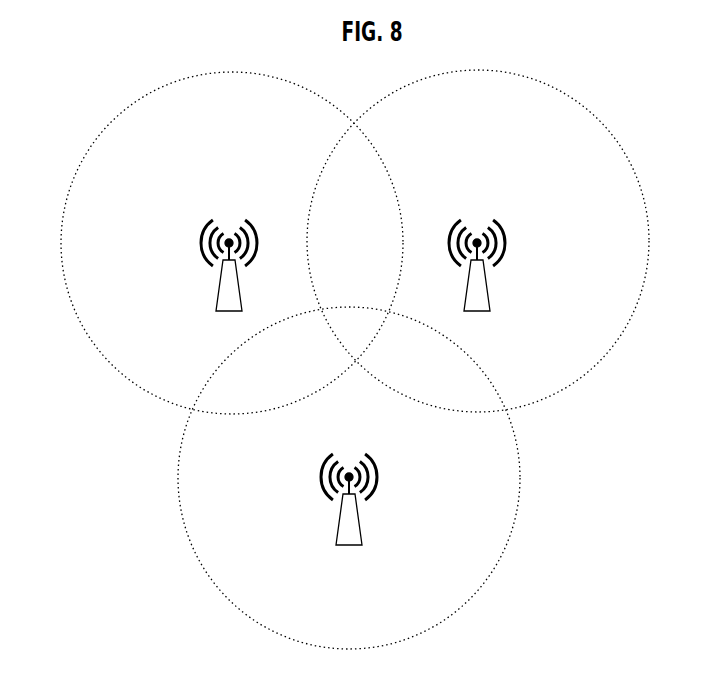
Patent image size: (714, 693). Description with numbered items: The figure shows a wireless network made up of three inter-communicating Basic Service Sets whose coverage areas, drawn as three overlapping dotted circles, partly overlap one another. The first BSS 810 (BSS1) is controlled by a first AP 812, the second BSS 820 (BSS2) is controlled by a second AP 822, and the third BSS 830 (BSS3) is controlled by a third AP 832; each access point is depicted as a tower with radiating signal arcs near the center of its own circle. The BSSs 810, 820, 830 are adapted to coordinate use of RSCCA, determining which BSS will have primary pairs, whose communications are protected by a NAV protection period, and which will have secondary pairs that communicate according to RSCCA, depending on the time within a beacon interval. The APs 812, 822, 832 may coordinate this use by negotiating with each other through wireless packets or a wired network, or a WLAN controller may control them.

The first BSS 810 is at (105, 122).
The second BSS 820 is at (600, 122).
The third BSS 830 is at (227, 598).
The first AP 812 is at (226, 312).
The second AP 822 is at (477, 312).
The third AP 832 is at (349, 545).